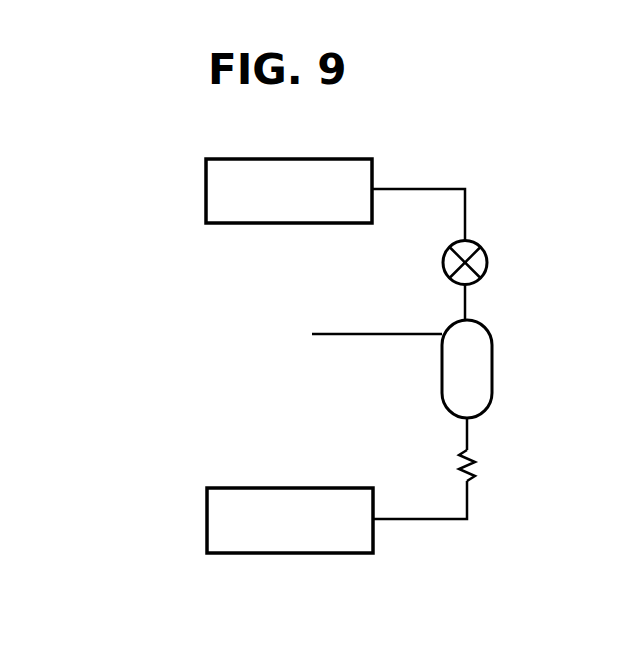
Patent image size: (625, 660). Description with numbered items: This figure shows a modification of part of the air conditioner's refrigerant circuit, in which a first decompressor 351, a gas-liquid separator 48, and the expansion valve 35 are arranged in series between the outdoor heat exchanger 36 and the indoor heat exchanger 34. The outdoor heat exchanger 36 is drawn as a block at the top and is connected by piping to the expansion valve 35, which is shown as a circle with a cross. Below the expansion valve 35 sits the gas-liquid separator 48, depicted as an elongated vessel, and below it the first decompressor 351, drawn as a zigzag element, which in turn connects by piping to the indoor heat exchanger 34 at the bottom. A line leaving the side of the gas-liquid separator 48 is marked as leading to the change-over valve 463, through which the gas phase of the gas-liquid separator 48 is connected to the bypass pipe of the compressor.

The outdoor heat exchanger 36 is at (285, 122).
The expansion valve 35 is at (488, 258).
The change-over valve 463 is at (307, 338).
The gas-liquid separator 48 is at (493, 356).
The first decompressor 351 is at (477, 461).
The indoor heat exchanger 34 is at (296, 555).